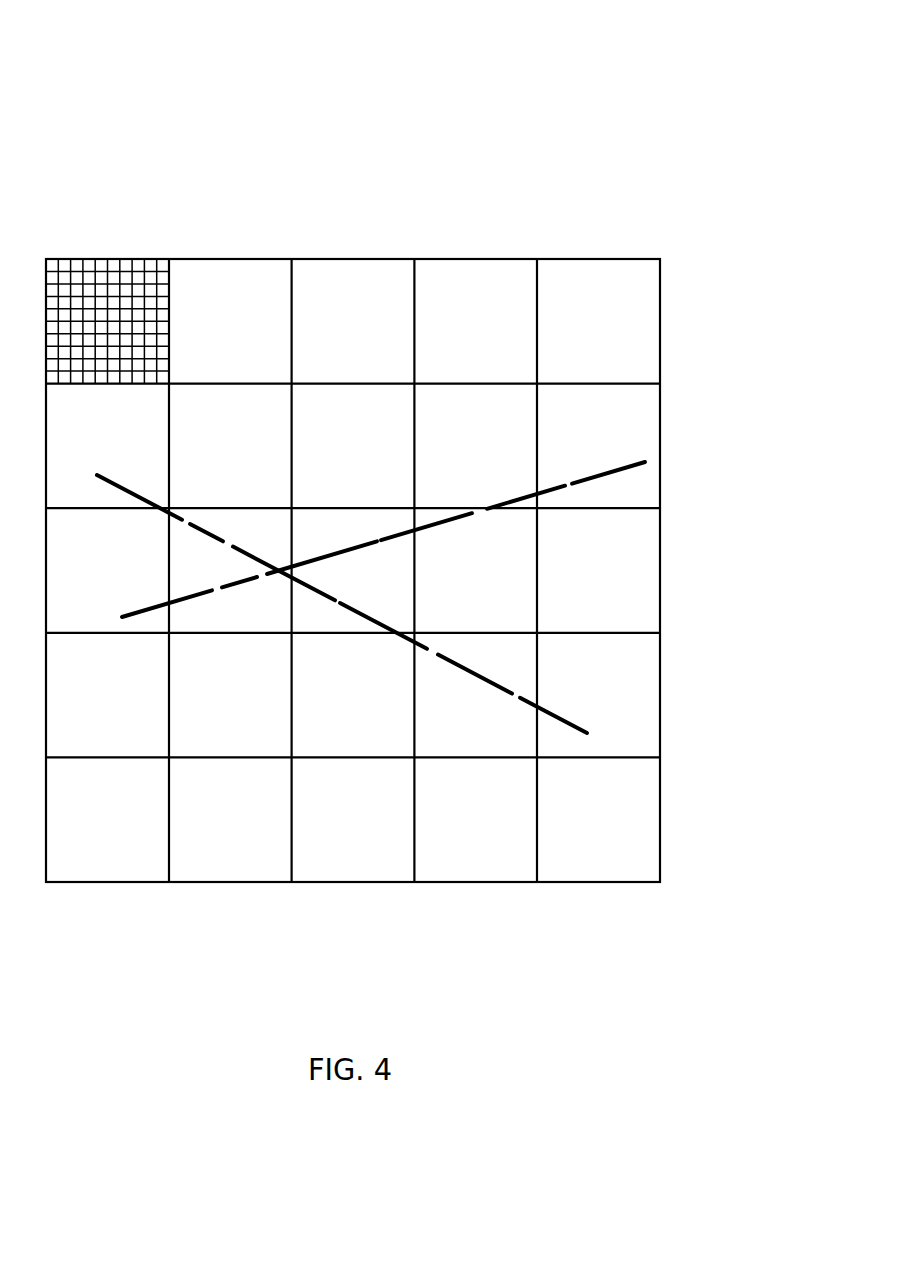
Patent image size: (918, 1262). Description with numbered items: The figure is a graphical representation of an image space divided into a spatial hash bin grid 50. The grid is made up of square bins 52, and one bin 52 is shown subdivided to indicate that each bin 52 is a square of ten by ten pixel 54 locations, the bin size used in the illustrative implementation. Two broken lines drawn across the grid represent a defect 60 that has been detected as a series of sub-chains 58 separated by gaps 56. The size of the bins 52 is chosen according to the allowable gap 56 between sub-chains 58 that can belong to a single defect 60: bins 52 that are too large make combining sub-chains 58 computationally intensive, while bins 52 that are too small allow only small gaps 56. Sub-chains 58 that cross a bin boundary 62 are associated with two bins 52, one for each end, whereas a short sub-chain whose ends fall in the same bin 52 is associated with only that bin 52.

The spatial hash bin grid 50 is at (782, 131).
The bin 52 is at (640, 322).
The pixel 54 is at (116, 268).
The gap 56 is at (568, 483).
The sub-chain 58 is at (586, 483).
The defect 60 is at (357, 548).
The bin boundary 62 is at (640, 630).